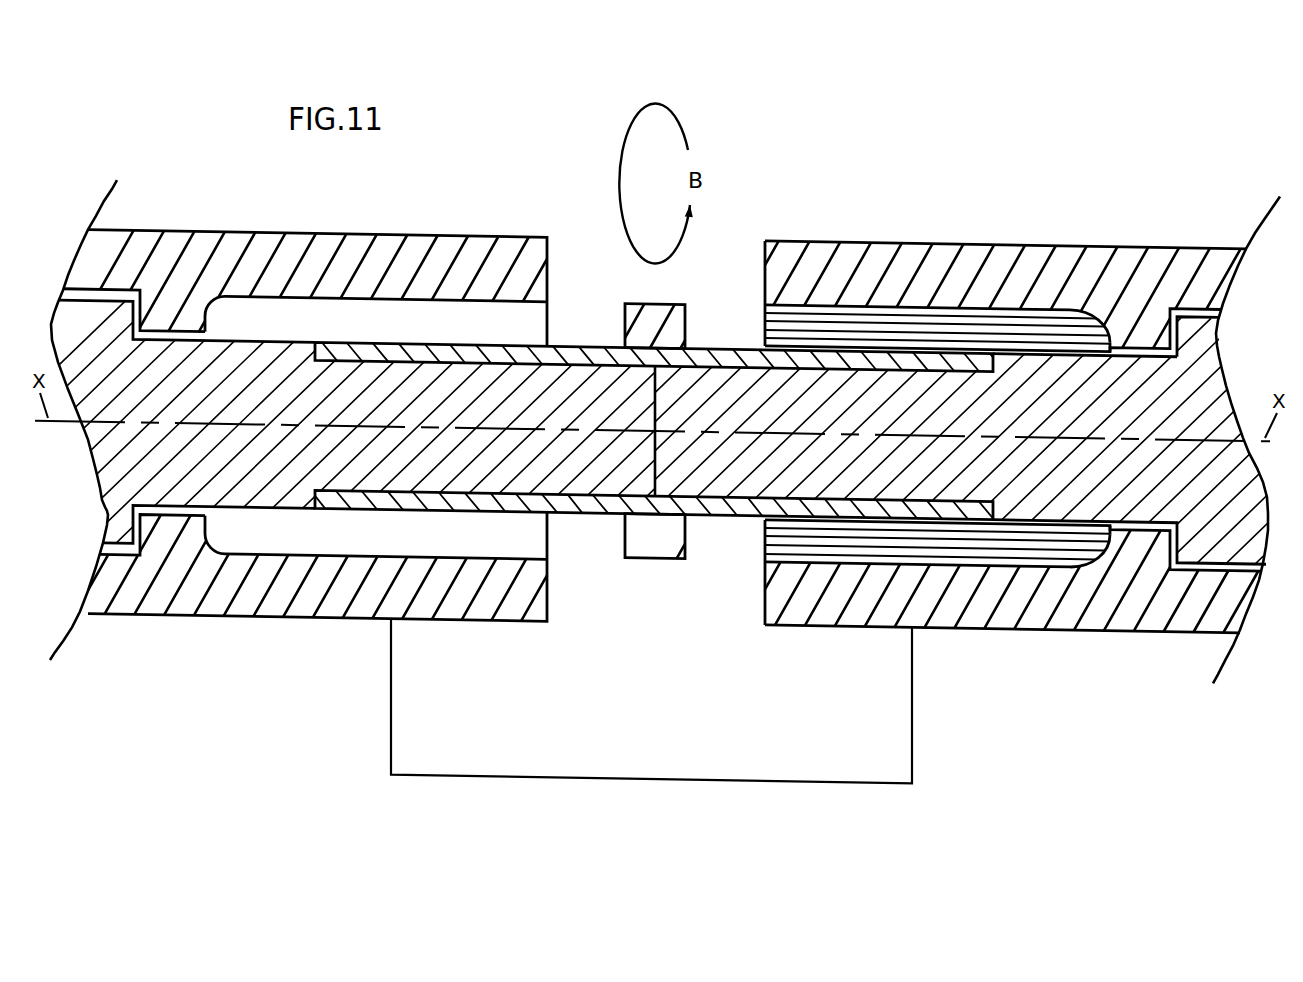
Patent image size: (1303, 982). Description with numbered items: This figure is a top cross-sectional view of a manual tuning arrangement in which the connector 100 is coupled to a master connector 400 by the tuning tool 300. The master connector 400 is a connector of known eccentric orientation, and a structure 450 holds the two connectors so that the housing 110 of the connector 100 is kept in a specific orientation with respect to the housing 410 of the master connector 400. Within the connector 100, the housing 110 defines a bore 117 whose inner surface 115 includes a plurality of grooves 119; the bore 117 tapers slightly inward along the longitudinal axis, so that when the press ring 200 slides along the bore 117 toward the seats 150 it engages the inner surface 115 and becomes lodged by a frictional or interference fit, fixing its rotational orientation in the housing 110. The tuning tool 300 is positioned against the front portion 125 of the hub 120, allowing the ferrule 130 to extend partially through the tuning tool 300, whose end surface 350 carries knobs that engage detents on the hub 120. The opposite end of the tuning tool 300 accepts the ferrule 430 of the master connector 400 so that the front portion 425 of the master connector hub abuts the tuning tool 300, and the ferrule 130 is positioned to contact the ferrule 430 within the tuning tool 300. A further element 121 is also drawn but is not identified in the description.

The connector 100 is at (1083, 210).
The housing 110 is at (1157, 250).
The inner surface 115 is at (872, 300).
The bore 117 is at (765, 328).
The grooves 119 is at (803, 330).
The hub 120 is at (1197, 349).
The liner layer 121 is at (1037, 523).
The front portion 125 is at (1137, 490).
The ferrule 130 is at (917, 383).
The seats 150 is at (1060, 318).
The press ring 200 is at (668, 562).
The tuning tool 300 is at (598, 513).
The end surface 350 is at (1007, 368).
The master connector 400 is at (232, 195).
The housing 410 is at (458, 245).
The front portion 425 is at (193, 487).
The ferrule 430 is at (527, 492).
The structure 450 is at (715, 782).